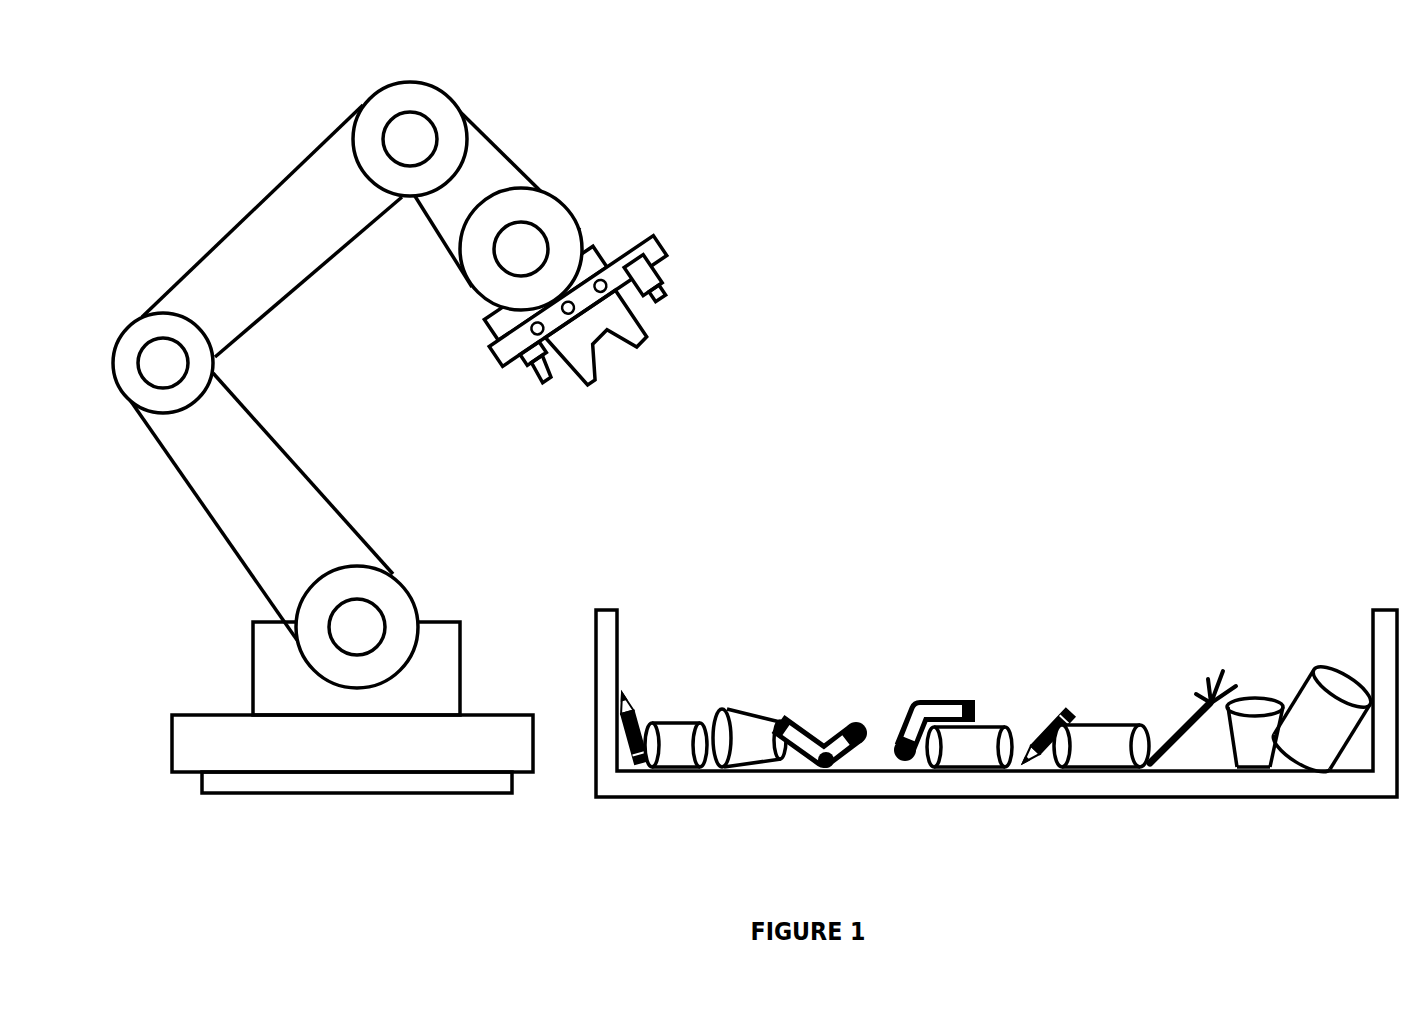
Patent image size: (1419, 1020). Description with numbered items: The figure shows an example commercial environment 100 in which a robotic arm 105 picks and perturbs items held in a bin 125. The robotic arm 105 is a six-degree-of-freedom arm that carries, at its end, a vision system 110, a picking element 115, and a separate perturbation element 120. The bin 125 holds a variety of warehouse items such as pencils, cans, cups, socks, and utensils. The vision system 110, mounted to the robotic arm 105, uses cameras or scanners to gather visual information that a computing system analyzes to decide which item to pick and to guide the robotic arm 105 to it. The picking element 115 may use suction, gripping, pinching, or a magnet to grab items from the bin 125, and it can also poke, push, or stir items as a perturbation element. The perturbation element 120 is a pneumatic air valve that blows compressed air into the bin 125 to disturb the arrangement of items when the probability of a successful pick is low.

The commercial environment 100 is at (151, 101).
The robotic arm 105 is at (155, 492).
The vision system 110 is at (573, 326).
The picking element 115 is at (659, 340).
The perturbation element 120 is at (560, 390).
The bin 125 is at (583, 788).